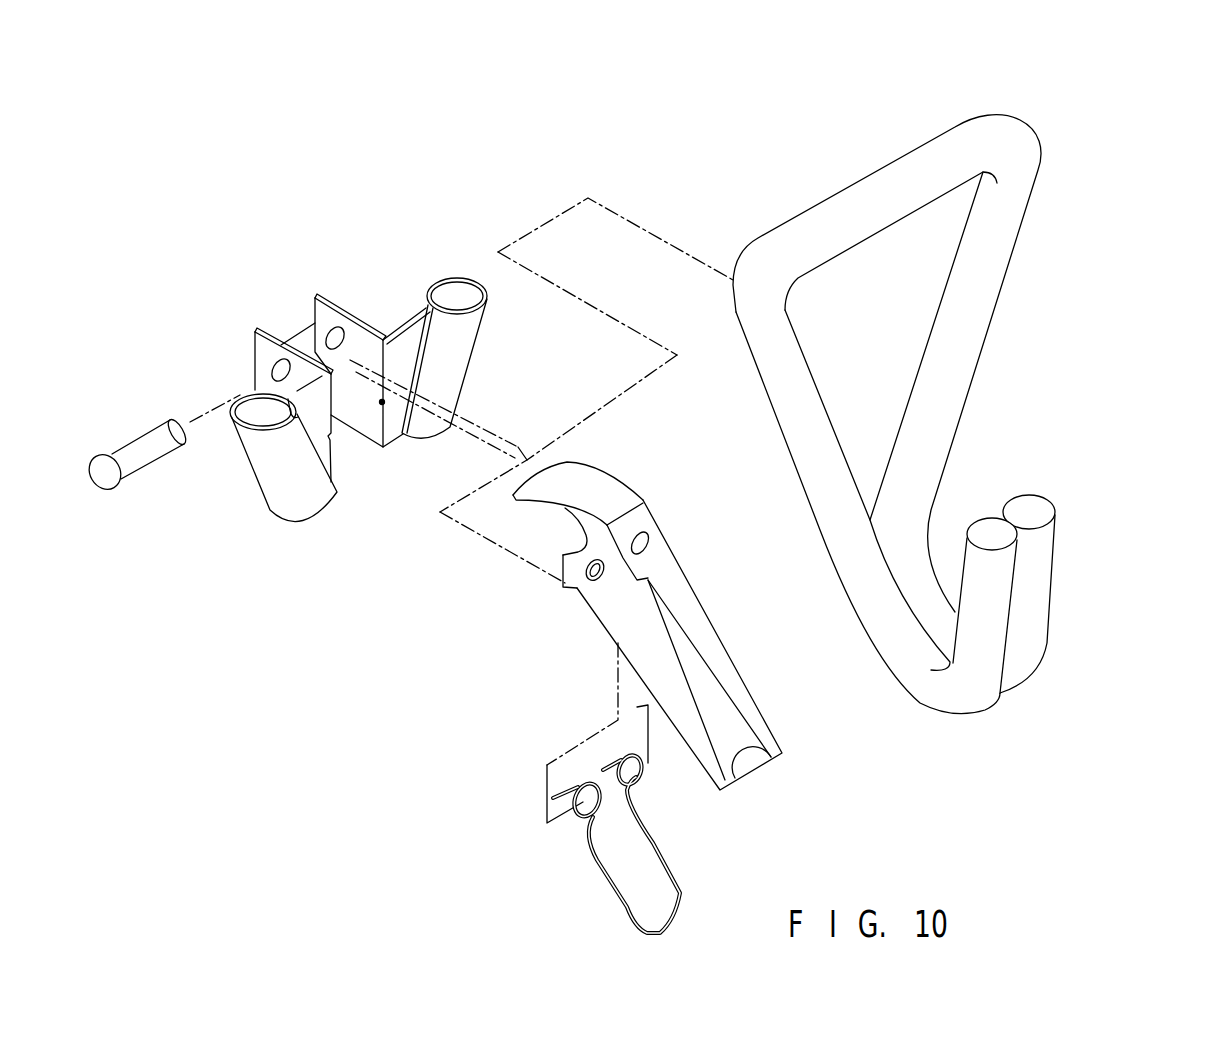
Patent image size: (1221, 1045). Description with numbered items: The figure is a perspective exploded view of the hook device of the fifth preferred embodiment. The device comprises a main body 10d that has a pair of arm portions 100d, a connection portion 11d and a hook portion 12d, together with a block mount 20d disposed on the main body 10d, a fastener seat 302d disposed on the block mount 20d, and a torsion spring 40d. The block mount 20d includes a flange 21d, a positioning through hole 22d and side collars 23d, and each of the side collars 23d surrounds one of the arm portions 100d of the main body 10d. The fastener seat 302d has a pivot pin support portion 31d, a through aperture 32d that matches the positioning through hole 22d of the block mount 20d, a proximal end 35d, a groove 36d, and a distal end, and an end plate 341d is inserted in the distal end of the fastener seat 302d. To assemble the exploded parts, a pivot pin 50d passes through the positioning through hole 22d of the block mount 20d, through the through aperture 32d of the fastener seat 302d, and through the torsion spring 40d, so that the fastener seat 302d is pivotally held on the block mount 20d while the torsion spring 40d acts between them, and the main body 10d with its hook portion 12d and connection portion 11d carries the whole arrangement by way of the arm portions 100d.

The main body 10d is at (1104, 198).
The arm portions 100d is at (993, 320).
The connection portion 11d is at (880, 537).
The hook portion 12d is at (1047, 603).
The block mount 20d is at (374, 256).
The first flange 21d is at (300, 345).
The positioning through hole 22d is at (342, 342).
The side collars 23d is at (455, 365).
The pivot pin 50d is at (143, 448).
The fastener seat 302d is at (700, 468).
The proximal end 35d is at (552, 490).
The pivot pin support portion 31d is at (575, 558).
The through aperture 32d is at (597, 575).
The groove 36d is at (695, 668).
The end plate 341d is at (750, 762).
The torsion spring 40d is at (540, 866).